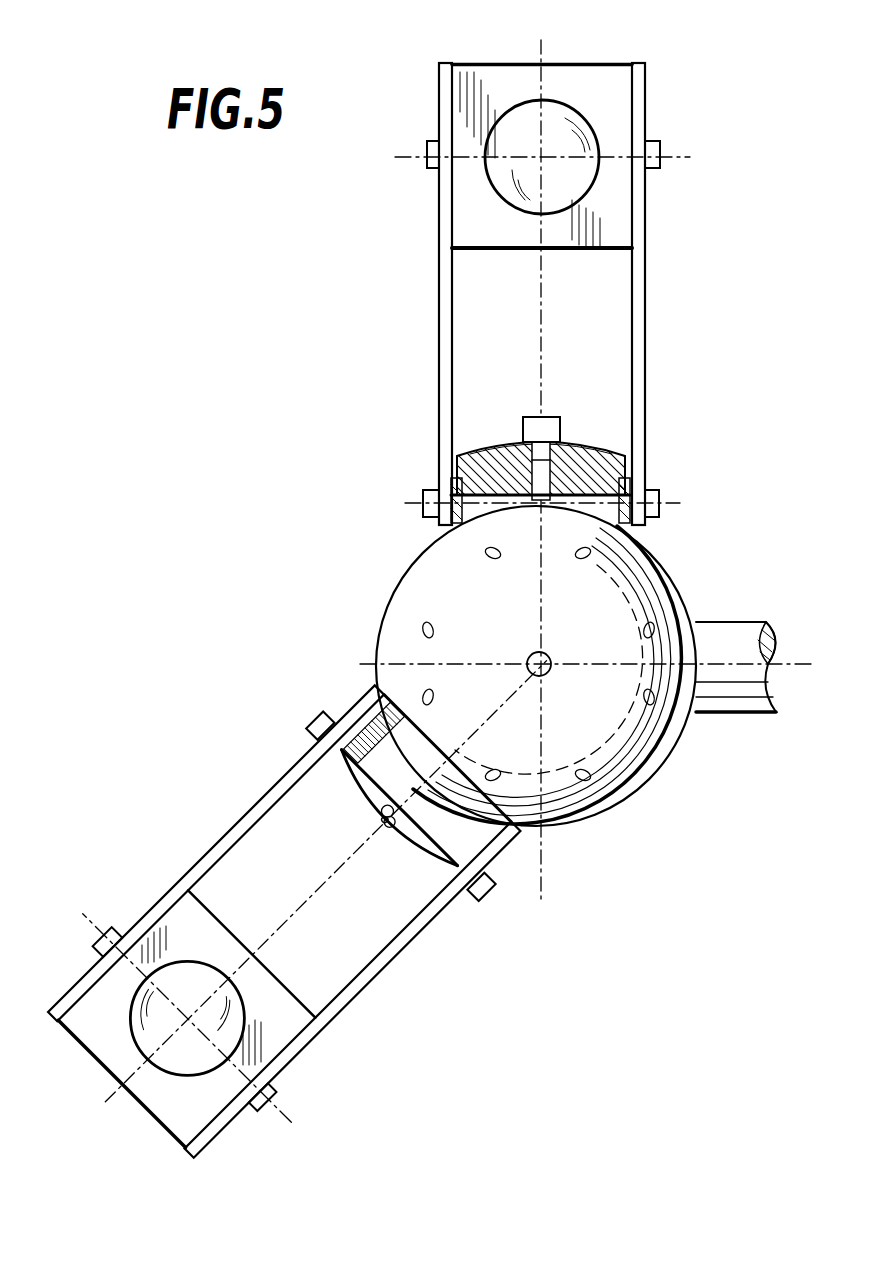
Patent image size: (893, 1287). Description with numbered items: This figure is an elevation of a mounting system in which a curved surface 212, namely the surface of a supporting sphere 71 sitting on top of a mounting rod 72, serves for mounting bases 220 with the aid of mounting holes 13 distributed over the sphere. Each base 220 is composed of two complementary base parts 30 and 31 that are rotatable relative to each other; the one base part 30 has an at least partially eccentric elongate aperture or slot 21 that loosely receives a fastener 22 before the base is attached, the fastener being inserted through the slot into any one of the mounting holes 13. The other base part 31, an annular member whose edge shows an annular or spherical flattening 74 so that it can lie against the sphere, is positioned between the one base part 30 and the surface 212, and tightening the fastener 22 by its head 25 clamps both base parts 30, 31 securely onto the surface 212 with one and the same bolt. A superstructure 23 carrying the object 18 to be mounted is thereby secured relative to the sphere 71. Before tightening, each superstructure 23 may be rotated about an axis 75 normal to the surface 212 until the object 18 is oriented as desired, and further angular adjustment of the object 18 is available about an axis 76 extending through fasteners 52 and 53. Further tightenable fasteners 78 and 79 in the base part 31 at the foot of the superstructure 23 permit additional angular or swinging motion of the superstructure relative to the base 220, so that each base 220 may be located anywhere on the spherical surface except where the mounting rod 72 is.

The mounting holes 13 is at (500, 560).
The object 18 is at (574, 106).
The elongate aperture or slot 21 is at (530, 437).
The fastener 22 is at (546, 500).
The superstructure 23 is at (432, 303).
The head 25 is at (552, 416).
The base part 30 is at (626, 462).
The base part 31 is at (458, 522).
The fastener 52 is at (428, 166).
The fastener 53 is at (664, 157).
The supporting sphere 71 is at (688, 573).
The mounting rod 72 is at (768, 622).
The annular or spherical flattening 74 is at (638, 612).
The axis 75 is at (538, 356).
The axis 76 is at (420, 155).
The tightenable fastener 78 is at (422, 500).
The tightenable fastener 79 is at (660, 503).
The curved surface 212 is at (610, 808).
The base 220 is at (596, 442).